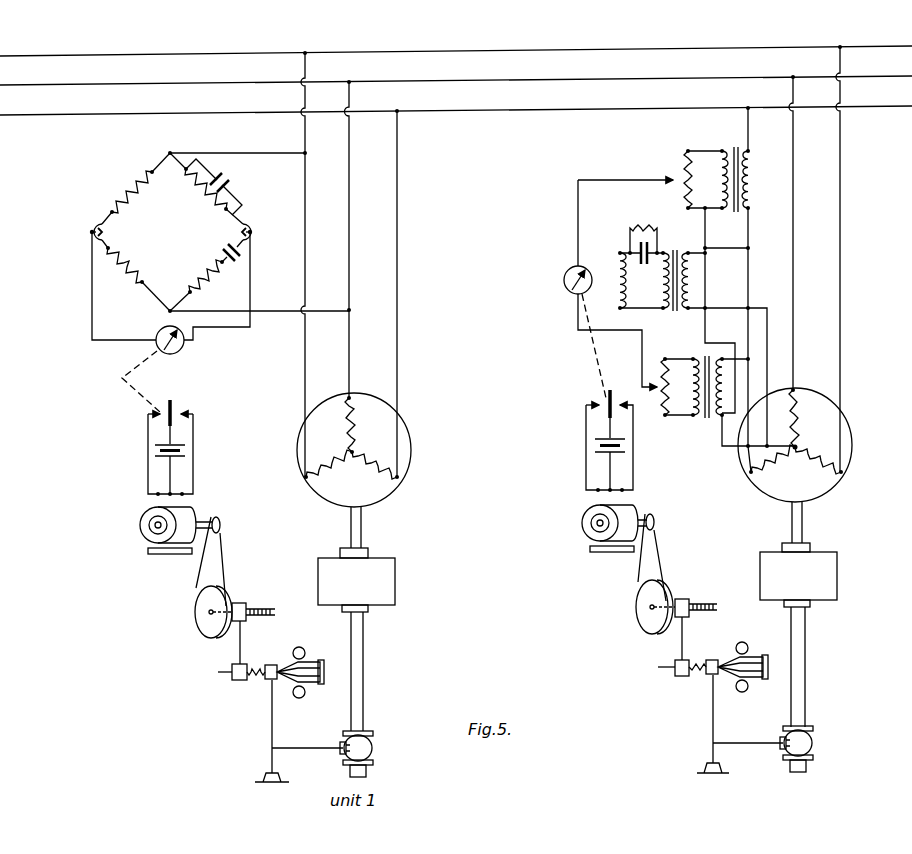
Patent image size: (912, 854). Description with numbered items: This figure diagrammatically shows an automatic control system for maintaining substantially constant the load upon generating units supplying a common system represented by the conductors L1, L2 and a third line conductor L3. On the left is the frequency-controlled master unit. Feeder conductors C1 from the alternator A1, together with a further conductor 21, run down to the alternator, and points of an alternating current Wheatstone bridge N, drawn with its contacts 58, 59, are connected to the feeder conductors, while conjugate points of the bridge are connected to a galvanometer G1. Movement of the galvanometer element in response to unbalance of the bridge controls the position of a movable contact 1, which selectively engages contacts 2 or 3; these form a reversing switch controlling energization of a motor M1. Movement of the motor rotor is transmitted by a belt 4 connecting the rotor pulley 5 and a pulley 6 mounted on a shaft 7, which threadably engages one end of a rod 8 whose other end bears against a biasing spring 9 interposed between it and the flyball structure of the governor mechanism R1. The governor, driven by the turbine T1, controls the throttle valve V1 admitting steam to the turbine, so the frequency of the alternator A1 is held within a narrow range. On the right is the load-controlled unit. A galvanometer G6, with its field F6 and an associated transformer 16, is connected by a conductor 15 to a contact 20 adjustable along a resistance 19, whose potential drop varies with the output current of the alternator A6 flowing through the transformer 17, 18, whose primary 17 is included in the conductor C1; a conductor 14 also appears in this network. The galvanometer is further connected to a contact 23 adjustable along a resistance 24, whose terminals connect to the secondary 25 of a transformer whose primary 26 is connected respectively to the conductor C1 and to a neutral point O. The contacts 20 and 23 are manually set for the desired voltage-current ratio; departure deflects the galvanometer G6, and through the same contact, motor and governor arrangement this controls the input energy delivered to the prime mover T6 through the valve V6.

The conductor L1 is at (456, 43).
The conductor L2 is at (456, 72).
The supply line L3 is at (456, 101).
The alternating current Wheatstone bridge N is at (150, 217).
The contact 58 is at (84, 228).
The contact 59 is at (106, 232).
The feeder conductor C1 is at (760, 226).
The conductor 21 is at (398, 201).
The galvanometer G1 is at (155, 332).
The movable contact 1 is at (196, 406).
The contact 2 is at (150, 422).
The contact 3 is at (188, 422).
The motor M1 is at (188, 512).
The rotor pulley 5 is at (222, 522).
The belt 4 is at (226, 566).
The pulley 6 is at (200, 620).
The shaft 7 is at (274, 610).
The rod 8 is at (242, 651).
The biasing spring 9 is at (258, 684).
The governor mechanism R1 is at (305, 652).
The alternator A1 is at (408, 440).
The turbine T1 is at (393, 572).
The throttle valve V1 is at (372, 746).
The conductor 15 is at (577, 195).
The contact 20 is at (683, 178).
The resistance 19 is at (700, 158).
The transformer winding 18 is at (722, 150).
The transformer primary 17 is at (750, 181).
The conductor 14 is at (706, 287).
The galvanometer field F6 is at (614, 268).
The transformer 16 is at (676, 252).
The galvanometer G6 is at (564, 287).
The contact 23 is at (663, 418).
The transformer primary 26 is at (690, 360).
The resistance 24 is at (692, 418).
The transformer secondary 25 is at (740, 382).
The neutral point O is at (798, 447).
The alternator A6 is at (842, 440).
The prime mover T6 is at (835, 576).
The valve V6 is at (812, 742).